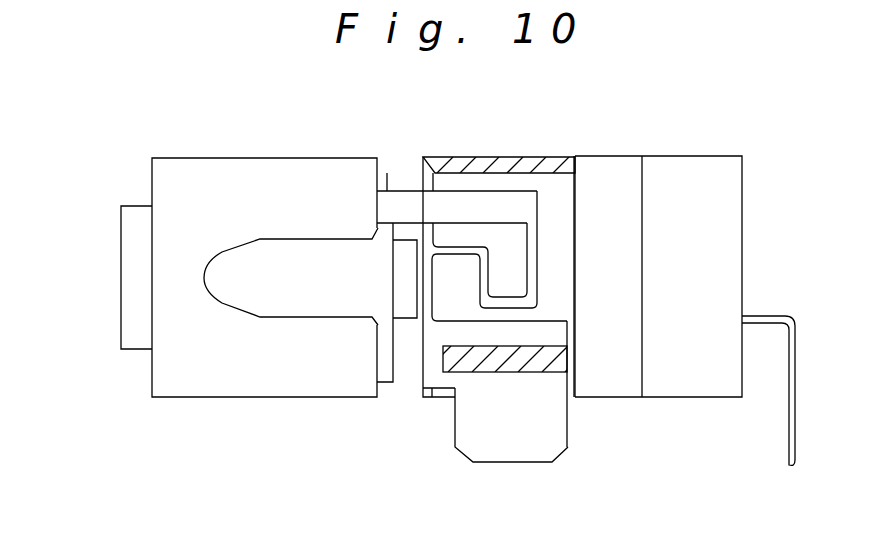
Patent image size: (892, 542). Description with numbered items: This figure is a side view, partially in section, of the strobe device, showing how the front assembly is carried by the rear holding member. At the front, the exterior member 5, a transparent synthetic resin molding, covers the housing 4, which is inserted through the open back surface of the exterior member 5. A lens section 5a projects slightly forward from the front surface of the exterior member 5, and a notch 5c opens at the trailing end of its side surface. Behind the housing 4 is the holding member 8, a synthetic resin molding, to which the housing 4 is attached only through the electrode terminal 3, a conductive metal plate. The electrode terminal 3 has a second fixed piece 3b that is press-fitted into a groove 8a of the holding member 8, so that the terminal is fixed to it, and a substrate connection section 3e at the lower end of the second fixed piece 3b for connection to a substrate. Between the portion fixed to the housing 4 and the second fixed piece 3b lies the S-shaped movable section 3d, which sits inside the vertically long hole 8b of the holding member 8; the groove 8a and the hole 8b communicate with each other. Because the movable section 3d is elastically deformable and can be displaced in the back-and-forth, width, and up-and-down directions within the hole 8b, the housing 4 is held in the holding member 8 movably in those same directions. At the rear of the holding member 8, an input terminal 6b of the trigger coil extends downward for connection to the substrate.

The electrode terminal 3 is at (470, 183).
The second fixed piece 3b is at (547, 380).
The movable section 3d is at (532, 261).
The substrate connection section 3e is at (510, 462).
The housing 4 is at (386, 172).
The exterior member 5 is at (250, 157).
The lens section 5a is at (132, 279).
The notch 5c is at (300, 317).
The input terminal 6b is at (767, 315).
The holding member 8 is at (673, 156).
The groove 8a is at (573, 332).
The vertically long hole 8b is at (556, 207).